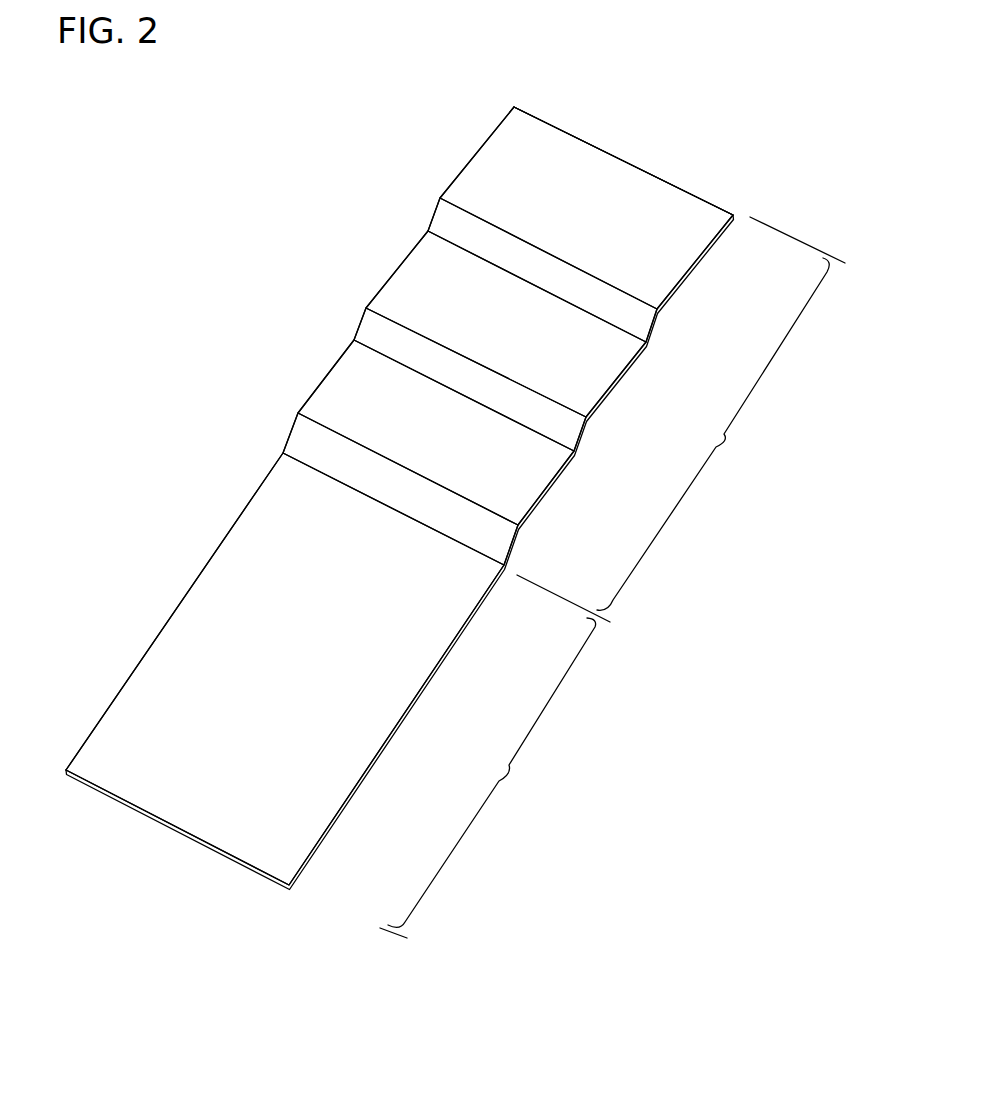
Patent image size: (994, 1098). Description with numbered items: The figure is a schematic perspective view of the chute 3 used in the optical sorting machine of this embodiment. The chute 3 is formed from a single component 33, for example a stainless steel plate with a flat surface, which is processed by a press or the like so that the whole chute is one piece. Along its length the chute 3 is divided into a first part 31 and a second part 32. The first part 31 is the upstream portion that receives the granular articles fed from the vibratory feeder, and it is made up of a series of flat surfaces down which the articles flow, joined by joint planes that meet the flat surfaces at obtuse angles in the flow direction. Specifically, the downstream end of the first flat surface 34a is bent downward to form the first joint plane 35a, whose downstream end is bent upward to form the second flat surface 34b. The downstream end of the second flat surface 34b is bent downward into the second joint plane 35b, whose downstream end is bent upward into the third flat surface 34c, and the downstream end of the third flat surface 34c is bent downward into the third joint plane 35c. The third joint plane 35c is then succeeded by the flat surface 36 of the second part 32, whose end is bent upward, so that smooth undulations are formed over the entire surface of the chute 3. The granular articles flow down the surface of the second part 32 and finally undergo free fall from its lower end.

The chute 3 is at (227, 244).
The first part 31 is at (721, 413).
The second part 32 is at (495, 756).
The component 33 is at (627, 172).
The first flat surface 34a is at (500, 167).
The second flat surface 34b is at (418, 280).
The third flat surface 34c is at (347, 387).
The first joint plane 35a is at (612, 308).
The second joint plane 35b is at (538, 415).
The third joint plane 35c is at (465, 525).
The flat surface of second part 36 is at (213, 612).